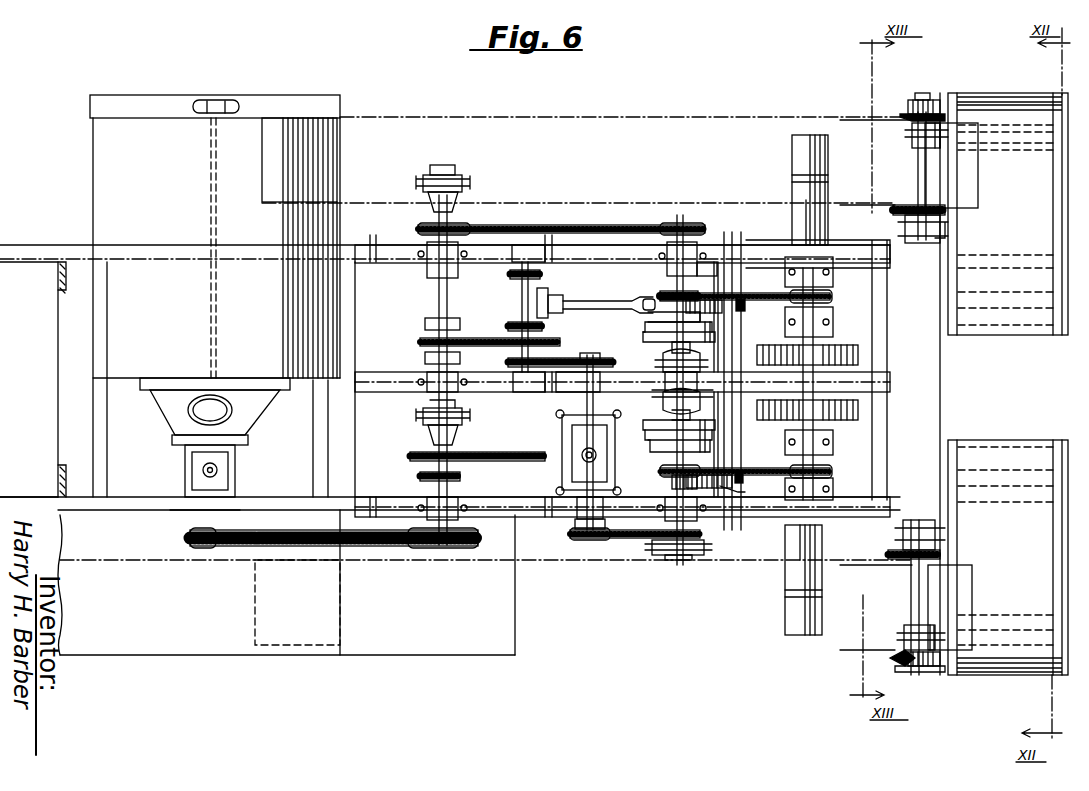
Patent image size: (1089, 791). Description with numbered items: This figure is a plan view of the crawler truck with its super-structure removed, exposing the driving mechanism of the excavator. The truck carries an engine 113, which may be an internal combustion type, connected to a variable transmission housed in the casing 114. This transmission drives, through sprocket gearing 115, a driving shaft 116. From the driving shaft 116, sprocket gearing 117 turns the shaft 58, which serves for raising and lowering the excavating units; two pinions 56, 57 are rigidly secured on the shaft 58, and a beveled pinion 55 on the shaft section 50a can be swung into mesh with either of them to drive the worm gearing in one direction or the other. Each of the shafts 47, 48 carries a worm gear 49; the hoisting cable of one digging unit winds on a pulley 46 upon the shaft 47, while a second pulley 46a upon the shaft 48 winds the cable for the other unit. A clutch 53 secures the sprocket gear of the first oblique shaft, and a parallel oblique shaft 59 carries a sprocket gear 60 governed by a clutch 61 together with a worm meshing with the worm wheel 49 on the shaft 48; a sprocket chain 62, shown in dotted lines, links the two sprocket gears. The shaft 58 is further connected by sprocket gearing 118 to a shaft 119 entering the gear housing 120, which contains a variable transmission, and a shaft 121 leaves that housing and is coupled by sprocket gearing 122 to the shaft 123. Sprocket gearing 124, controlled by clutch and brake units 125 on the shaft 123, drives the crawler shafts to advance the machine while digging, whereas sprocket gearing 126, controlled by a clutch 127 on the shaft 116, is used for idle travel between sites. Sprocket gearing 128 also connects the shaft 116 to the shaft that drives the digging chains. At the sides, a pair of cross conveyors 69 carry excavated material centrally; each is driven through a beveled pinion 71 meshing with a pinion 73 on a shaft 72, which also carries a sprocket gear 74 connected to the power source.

The engine 113 is at (340, 133).
The casing 114 is at (228, 468).
The sprocket gearing 115 is at (232, 550).
The driving shaft 116 is at (437, 303).
The sprocket gearing 117 is at (495, 346).
The sprocket gearing 118 is at (556, 392).
The shaft 119 is at (598, 390).
The gear housing 120 is at (576, 440).
The shaft 121 is at (583, 520).
The sprocket gearing 122 is at (628, 532).
The shaft 123 is at (676, 290).
The sprocket gearing 124 is at (830, 298).
The clutch and brake units 125 is at (650, 333).
The sprocket gearing 126 is at (575, 197).
The clutch 127 is at (437, 172).
The sprocket gearing 128 is at (520, 458).
The pulley 46 is at (712, 240).
The second pulley 46a is at (695, 558).
The shaft 47 is at (700, 279).
The shaft 48 is at (662, 410).
The worm gear 49 is at (722, 322).
The second shaft section 50a is at (586, 305).
The clutch 53 is at (746, 305).
The beveled pinion 55 is at (550, 292).
The pinion 56 is at (510, 275).
The pinion 57 is at (510, 324).
The shaft 58 is at (522, 296).
The oblique shaft 59 is at (660, 470).
The sprocket gear 60 is at (738, 492).
The clutch 61 is at (744, 478).
The sprocket chain 62 is at (748, 365).
The cross conveyors 69 is at (1008, 384).
The beveled pinion 71 is at (940, 146).
The shaft 72 is at (918, 150).
The pinion 73 is at (900, 100).
The sprocket gear 74 is at (898, 218).